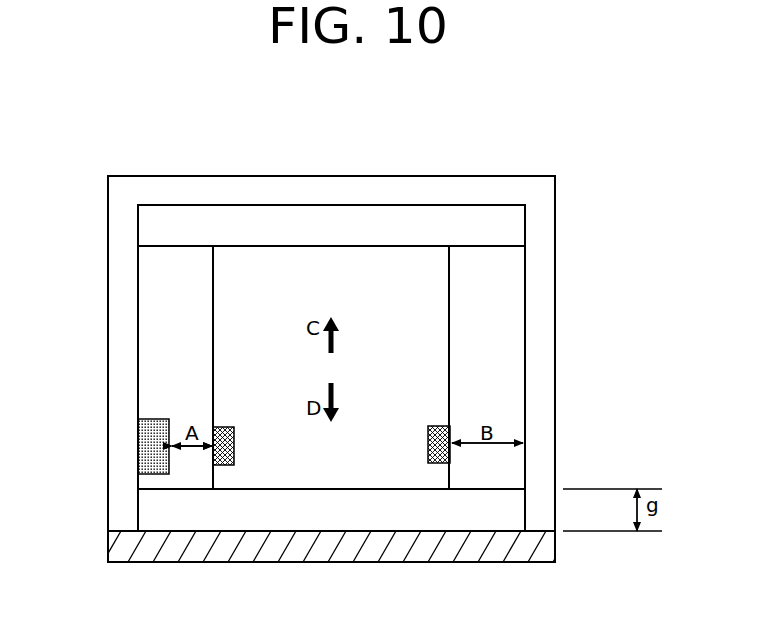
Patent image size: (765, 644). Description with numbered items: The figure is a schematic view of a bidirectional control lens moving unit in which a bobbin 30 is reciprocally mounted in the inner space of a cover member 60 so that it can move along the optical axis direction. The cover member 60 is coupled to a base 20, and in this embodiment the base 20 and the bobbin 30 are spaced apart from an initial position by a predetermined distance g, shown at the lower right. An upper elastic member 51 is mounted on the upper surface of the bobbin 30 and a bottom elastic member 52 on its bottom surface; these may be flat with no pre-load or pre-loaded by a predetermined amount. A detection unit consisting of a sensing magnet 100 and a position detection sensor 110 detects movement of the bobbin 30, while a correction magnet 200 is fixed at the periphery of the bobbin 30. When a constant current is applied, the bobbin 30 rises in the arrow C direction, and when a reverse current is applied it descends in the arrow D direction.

The base 20 is at (495, 545).
The bobbin 30 is at (395, 268).
The upper elastic member 51 is at (508, 242).
The bottom elastic member 52 is at (507, 487).
The cover member 60 is at (548, 327).
The sensing magnet 100 is at (224, 465).
The position detection sensor 110 is at (145, 450).
The correction magnet 200 is at (440, 463).